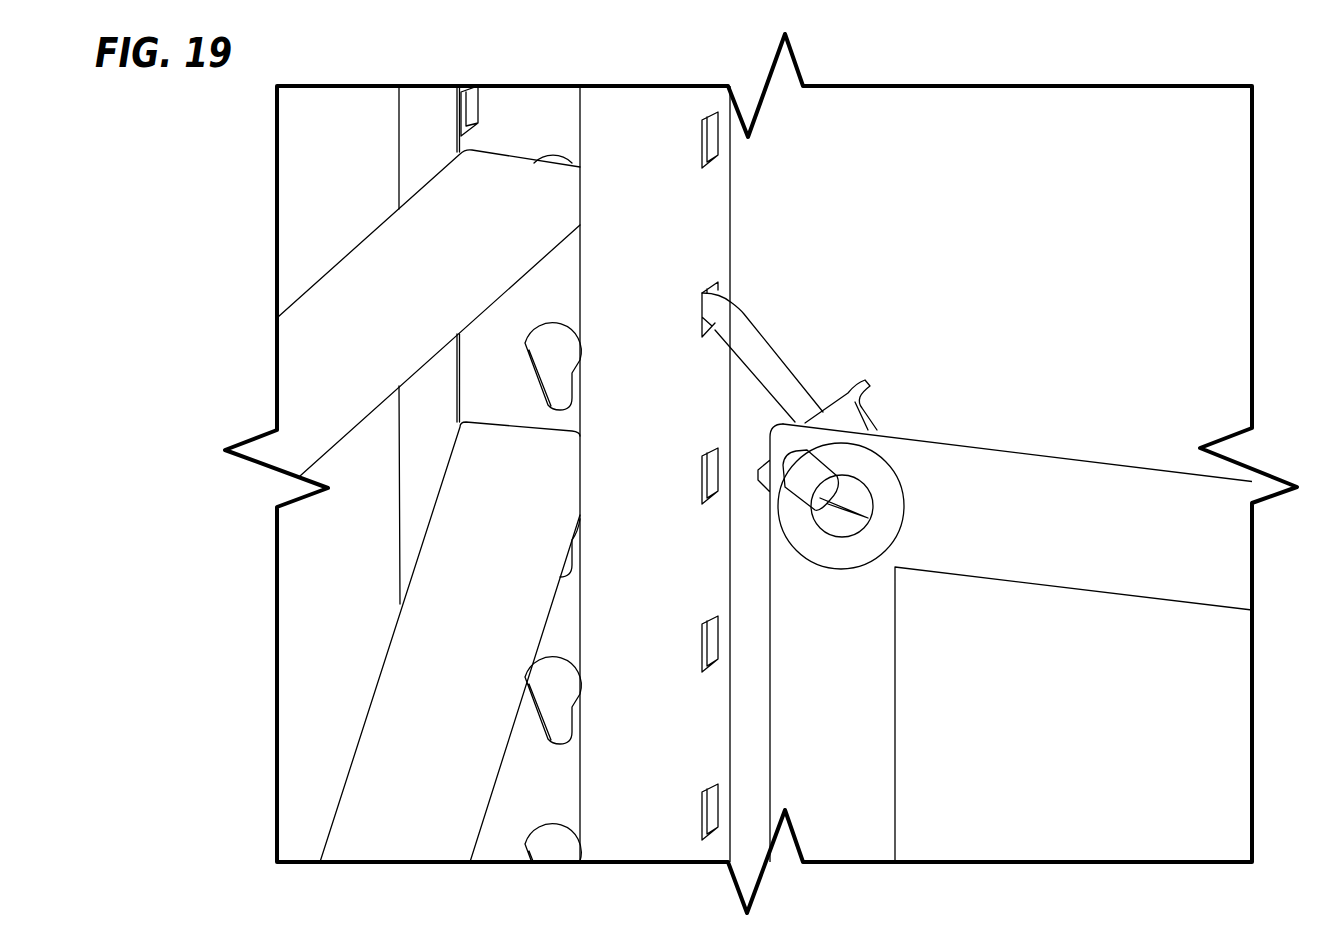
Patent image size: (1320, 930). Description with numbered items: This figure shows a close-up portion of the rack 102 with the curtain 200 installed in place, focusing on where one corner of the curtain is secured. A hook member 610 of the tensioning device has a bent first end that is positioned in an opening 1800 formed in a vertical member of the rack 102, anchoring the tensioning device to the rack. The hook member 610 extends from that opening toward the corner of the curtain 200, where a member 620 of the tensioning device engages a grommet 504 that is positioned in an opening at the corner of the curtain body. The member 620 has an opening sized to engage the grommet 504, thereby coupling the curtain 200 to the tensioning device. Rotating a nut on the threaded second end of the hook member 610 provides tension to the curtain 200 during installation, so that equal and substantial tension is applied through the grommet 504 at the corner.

The rack 102 is at (716, 200).
The opening 1800 is at (712, 287).
The hook member 610 is at (777, 368).
The grommet 504 is at (877, 478).
The member 620 is at (807, 487).
The curtain 200 is at (1092, 473).